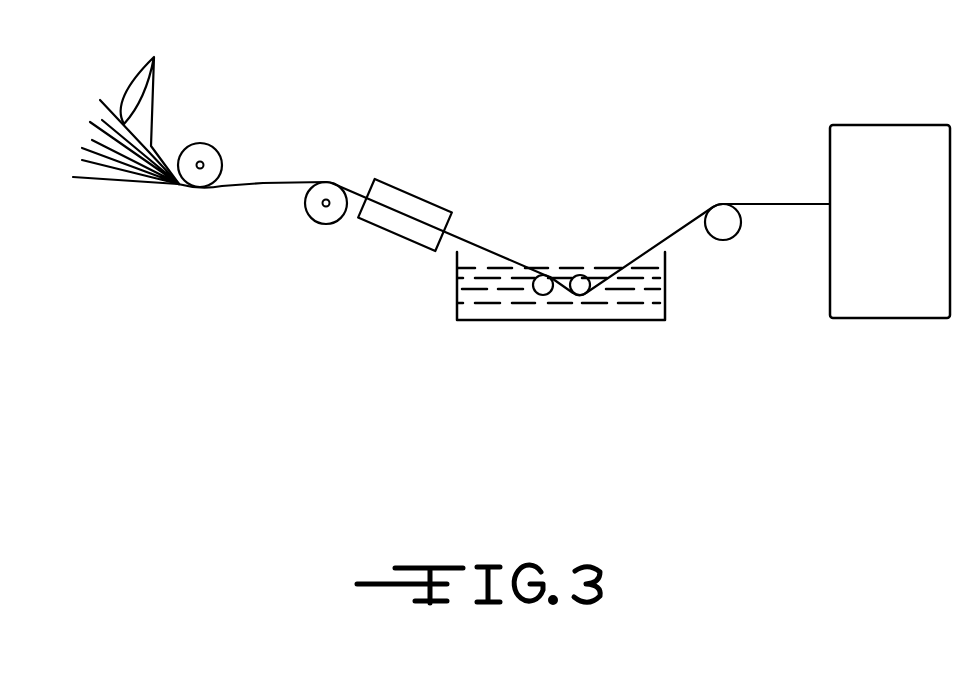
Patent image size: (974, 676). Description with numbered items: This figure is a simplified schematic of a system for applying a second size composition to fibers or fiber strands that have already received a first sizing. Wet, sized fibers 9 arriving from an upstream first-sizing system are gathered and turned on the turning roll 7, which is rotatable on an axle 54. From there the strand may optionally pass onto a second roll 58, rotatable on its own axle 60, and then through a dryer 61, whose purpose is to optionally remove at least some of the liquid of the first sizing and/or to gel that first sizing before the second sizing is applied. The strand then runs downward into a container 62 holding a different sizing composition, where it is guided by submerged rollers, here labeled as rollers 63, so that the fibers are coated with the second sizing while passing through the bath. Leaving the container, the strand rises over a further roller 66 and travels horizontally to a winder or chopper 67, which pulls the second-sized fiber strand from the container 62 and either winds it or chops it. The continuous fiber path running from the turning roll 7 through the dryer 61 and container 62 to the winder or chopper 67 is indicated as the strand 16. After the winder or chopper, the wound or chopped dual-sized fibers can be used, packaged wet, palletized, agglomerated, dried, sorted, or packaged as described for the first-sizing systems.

The wet sized fibers 9 is at (150, 105).
The turning roll 7 is at (200, 163).
The axle 54 is at (203, 163).
The fiber web 16 is at (263, 183).
The second roll 58 is at (306, 207).
The axle 60 is at (326, 214).
The dryer 61 is at (387, 178).
The container 62 is at (448, 276).
The guide rollers 63 is at (527, 263).
The roller 66 is at (737, 235).
The winder or chopper 67 is at (874, 205).